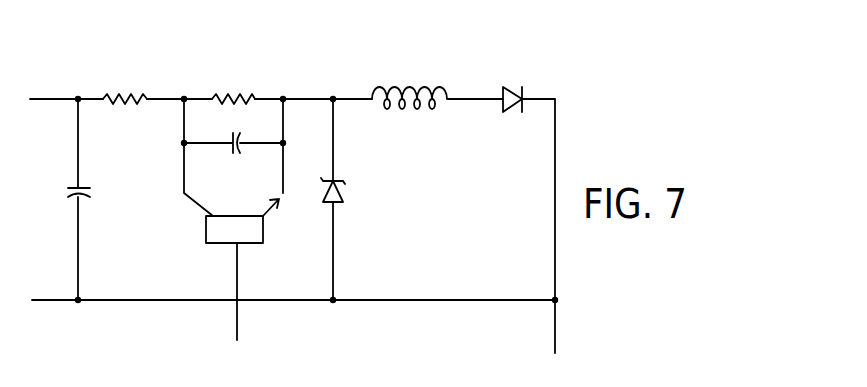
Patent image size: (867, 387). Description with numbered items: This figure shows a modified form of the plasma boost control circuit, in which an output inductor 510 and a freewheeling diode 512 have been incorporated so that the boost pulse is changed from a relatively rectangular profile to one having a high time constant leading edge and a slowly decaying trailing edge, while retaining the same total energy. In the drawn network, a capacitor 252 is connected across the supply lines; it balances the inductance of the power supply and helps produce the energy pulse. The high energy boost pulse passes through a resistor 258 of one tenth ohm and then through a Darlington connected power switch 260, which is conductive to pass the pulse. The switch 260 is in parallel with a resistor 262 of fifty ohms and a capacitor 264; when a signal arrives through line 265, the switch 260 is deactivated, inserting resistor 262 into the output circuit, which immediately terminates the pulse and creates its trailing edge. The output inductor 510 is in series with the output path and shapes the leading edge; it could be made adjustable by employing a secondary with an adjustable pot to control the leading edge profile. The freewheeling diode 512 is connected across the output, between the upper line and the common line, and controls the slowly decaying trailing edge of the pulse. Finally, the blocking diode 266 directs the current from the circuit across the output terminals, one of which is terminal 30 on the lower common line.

The terminal 30 is at (557, 300).
The capacitor 252 is at (90, 193).
The resistor 258 is at (126, 103).
The Darlington connected power switch 260 is at (248, 243).
The resistor 262 is at (243, 104).
The capacitor 264 is at (236, 156).
The line 265 is at (237, 326).
The blocking diode 266 is at (507, 90).
The output inductor 510 is at (413, 96).
The freewheeling diode 512 is at (343, 191).